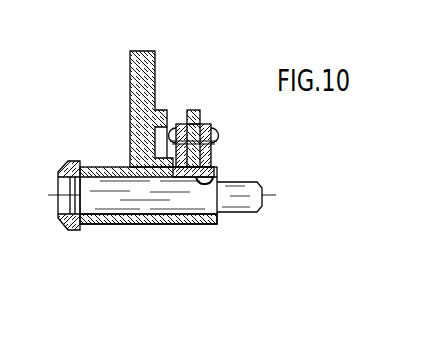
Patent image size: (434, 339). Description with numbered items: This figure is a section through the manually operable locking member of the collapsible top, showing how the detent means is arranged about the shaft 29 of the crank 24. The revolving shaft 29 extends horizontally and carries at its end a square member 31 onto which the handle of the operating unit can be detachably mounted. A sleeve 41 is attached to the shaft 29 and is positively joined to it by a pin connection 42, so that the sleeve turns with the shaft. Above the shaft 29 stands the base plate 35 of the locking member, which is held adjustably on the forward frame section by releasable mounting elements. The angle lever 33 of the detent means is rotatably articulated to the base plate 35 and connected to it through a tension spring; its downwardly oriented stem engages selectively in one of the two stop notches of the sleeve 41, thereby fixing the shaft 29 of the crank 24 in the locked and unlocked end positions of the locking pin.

The crank 24 is at (69, 160).
The shaft 29 is at (143, 190).
The square member 31 is at (247, 188).
The angle lever 33 is at (194, 110).
The base plate 35 is at (153, 71).
The sleeve 41 is at (203, 224).
The pin connection 42 is at (215, 176).